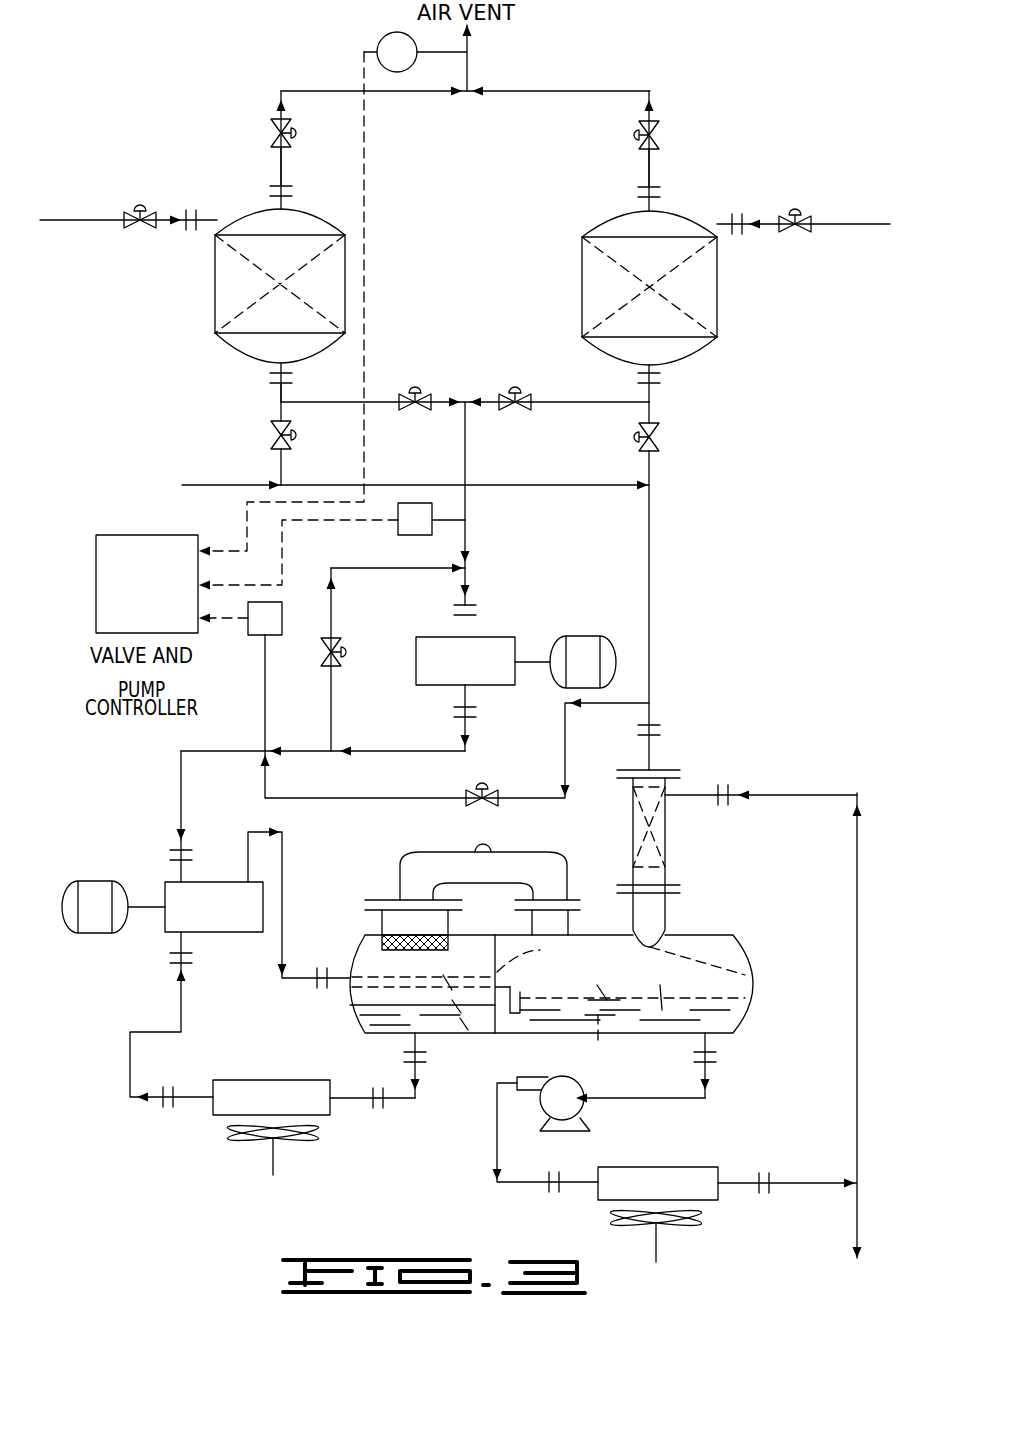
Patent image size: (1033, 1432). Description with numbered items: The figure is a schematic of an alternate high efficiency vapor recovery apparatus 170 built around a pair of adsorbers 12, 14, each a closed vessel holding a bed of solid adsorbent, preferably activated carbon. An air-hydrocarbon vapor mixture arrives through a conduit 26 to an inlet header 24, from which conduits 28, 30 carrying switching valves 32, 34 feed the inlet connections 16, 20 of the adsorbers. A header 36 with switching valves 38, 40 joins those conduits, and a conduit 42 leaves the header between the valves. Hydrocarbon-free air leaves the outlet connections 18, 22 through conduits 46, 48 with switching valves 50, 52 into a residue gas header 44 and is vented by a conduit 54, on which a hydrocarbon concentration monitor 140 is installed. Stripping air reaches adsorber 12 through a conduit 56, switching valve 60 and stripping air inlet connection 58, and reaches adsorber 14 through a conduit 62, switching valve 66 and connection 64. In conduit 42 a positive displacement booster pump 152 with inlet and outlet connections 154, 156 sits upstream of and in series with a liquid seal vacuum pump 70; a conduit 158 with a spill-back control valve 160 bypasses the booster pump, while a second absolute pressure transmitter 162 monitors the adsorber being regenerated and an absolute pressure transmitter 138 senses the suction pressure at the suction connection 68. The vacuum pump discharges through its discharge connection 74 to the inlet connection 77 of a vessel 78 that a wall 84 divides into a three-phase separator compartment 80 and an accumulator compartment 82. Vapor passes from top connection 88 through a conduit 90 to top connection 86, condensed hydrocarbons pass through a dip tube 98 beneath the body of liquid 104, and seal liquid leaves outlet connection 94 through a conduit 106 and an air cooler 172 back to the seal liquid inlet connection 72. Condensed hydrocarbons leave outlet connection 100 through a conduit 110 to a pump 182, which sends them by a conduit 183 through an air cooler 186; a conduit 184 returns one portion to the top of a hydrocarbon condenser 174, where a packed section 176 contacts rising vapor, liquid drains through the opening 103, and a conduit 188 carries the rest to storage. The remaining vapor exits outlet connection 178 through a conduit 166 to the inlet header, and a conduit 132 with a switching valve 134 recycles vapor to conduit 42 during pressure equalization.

The adsorber 12 is at (720, 288).
The adsorber 14 is at (350, 290).
The inlet connection 16 is at (640, 373).
The outlet connection 18 is at (640, 205).
The inlet connection 20 is at (276, 373).
The outlet connection 22 is at (290, 206).
The air-hydrocarbon vapor mixture inlet header 24 is at (513, 485).
The conduit 26 is at (240, 490).
The conduit 28 is at (655, 408).
The conduit 30 is at (278, 410).
The switching valve 32 is at (660, 446).
The switching valve 34 is at (272, 428).
The header 36 is at (448, 400).
The switching valve 38 is at (503, 400).
The switching valve 40 is at (432, 400).
The conduit 42 is at (470, 441).
The residue gas header 44 is at (578, 92).
The conduit 46 is at (655, 175).
The conduit 48 is at (281, 172).
The switching valve 50 is at (660, 120).
The switching valve 52 is at (280, 120).
The conduit 54 is at (478, 68).
The conduit 56 is at (818, 228).
The stripping air inlet connection 58 is at (717, 222).
The switching valve 60 is at (812, 222).
The conduit 62 is at (108, 228).
The connection 64 is at (215, 218).
The switching valve 66 is at (123, 213).
The suction connection 68 is at (175, 872).
The liquid seal vacuum pump 70 is at (252, 922).
The seal liquid inlet connection 72 is at (185, 946).
The discharge connection 74 is at (243, 872).
The inlet connection 77 is at (330, 986).
The combined three-phase separator and accumulator vessel 78 is at (378, 928).
The three-phase separator compartment 80 is at (478, 1040).
The accumulator compartment 82 is at (598, 1042).
The wall 84 is at (520, 948).
The top connection 86 is at (530, 921).
The top connection 88 is at (380, 935).
The conduit 90 is at (475, 860).
The outlet connection 94 is at (410, 1040).
The dip tube 98 is at (525, 979).
The outlet connection 100 is at (700, 1040).
The opening 103 is at (753, 980).
The body of liquid 104 is at (662, 978).
The conduit 106 is at (410, 1100).
The conduit 110 is at (660, 1098).
The conduit 132 is at (567, 745).
The switching valve 134 is at (470, 790).
The absolute pressure transmitter 138 is at (258, 625).
The hydrocarbon concentration monitor 140 is at (384, 39).
The positive displacement booster pump 152 is at (488, 645).
The inlet connection 154 is at (458, 625).
The outlet connection 156 is at (460, 700).
The conduit 158 is at (335, 690).
The spill-back control valve 160 is at (340, 645).
The second absolute pressure transmitter 162 is at (410, 525).
The conduit 166 is at (653, 548).
The apparatus 170 is at (586, 50).
The air cooler 172 is at (240, 1085).
The hydrocarbon condenser 174 is at (668, 910).
The packed section 176 is at (668, 855).
The outlet connection 178 is at (652, 750).
The pump 182 is at (578, 1098).
The conduit 183 is at (497, 1125).
The conduit 184 is at (700, 793).
The air cooler 186 is at (665, 1170).
The conduit 188 is at (855, 1232).